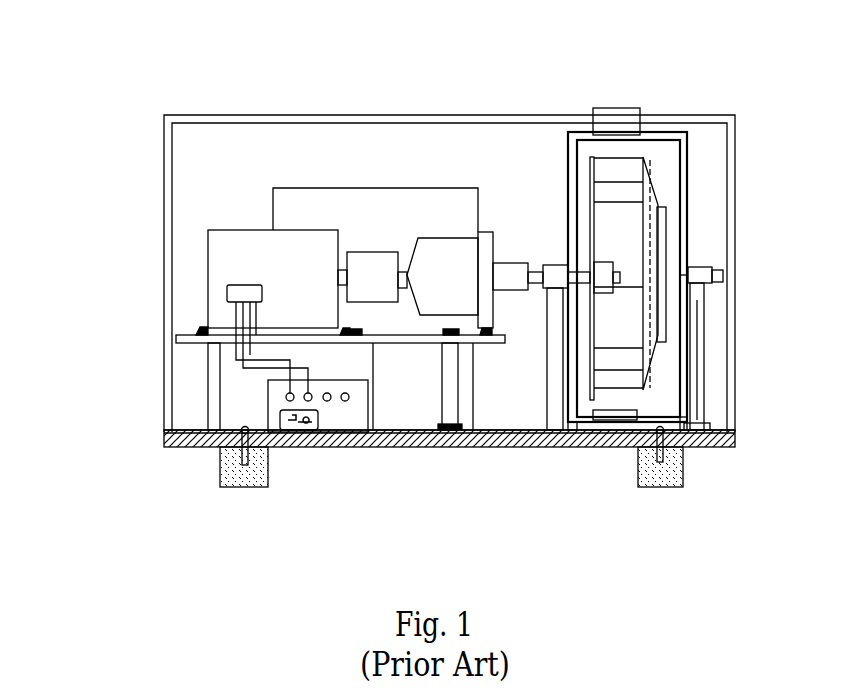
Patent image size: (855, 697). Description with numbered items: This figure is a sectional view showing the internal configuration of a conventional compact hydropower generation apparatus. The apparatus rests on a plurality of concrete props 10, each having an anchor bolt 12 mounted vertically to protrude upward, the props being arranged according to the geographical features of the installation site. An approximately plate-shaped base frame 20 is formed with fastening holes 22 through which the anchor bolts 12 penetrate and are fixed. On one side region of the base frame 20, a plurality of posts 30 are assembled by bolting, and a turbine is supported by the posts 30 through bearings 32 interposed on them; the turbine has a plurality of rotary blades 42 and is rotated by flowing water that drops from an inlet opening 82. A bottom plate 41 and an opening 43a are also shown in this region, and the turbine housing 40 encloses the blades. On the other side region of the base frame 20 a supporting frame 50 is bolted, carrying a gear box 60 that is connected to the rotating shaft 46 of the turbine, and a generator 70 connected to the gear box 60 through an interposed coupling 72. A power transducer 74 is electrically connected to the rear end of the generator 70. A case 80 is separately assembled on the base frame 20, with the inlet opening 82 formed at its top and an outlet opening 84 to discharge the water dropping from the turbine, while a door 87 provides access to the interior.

The concrete props 10 is at (245, 487).
The anchor bolt 12 is at (218, 448).
The base frame 20 is at (478, 448).
The fastening holes 22 is at (190, 429).
The posts 30 is at (700, 360).
The bearings 32 is at (690, 285).
The housing 40 is at (678, 172).
The bottom plate 41 is at (660, 333).
The rotary blades 42 is at (617, 212).
The opening 43a is at (660, 228).
The rotating shaft 46 is at (724, 274).
The supporting frame 50 is at (178, 333).
The gear box 60 is at (452, 255).
The generator 70 is at (237, 257).
The coupling 72 is at (365, 262).
The power transducer 74 is at (351, 433).
The case 80 is at (273, 118).
The inlet opening 82 is at (622, 112).
The outlet opening 84 is at (610, 415).
The door 87 is at (308, 205).